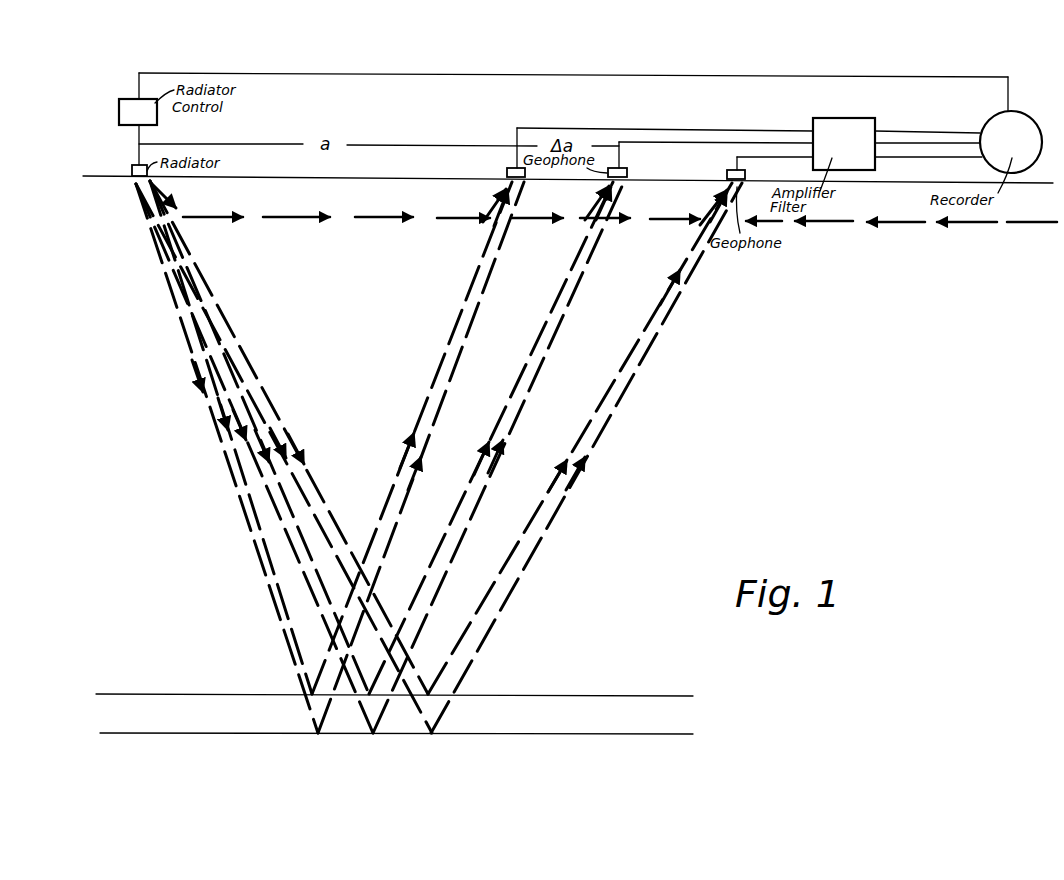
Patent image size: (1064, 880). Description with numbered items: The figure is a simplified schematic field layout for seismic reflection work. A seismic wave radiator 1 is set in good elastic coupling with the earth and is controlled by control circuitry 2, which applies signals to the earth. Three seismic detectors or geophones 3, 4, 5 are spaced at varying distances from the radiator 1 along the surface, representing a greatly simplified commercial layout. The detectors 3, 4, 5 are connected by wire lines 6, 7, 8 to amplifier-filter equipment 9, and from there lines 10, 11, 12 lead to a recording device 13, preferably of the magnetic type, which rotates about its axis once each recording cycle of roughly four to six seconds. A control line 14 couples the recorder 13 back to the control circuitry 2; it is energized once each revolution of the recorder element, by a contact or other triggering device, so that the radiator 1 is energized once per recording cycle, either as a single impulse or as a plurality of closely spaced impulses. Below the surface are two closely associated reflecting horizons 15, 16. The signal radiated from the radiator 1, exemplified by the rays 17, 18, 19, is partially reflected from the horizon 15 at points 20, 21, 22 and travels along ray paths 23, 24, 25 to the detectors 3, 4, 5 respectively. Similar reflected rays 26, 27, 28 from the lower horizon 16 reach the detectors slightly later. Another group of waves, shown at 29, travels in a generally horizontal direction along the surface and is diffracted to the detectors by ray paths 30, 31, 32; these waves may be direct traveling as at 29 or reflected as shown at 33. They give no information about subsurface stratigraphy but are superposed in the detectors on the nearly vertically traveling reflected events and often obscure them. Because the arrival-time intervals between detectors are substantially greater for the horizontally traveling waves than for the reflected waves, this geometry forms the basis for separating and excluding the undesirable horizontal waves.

The seismic wave radiator 1 is at (133, 170).
The control circuitry 2 is at (119, 109).
The seismic detector 3 is at (507, 172).
The seismic detector 4 is at (628, 171).
The seismic detector 5 is at (745, 172).
The wire line 6 is at (604, 128).
The wire line 7 is at (694, 141).
The wire line 8 is at (775, 156).
The amplifier-filter equipment 9 is at (842, 118).
The line 10 is at (890, 131).
The line 11 is at (943, 142).
The line 12 is at (899, 159).
The recording device 13 is at (1024, 112).
The control line 14 is at (460, 73).
The reflecting horizon 15 is at (153, 693).
The reflecting horizon 16 is at (146, 734).
The ray 17 is at (252, 520).
The ray 18 is at (281, 463).
The ray 19 is at (262, 390).
The reflection point 20 is at (314, 700).
The reflection point 21 is at (364, 712).
The reflection point 22 is at (434, 698).
The ray path 23 is at (460, 318).
The ray path 24 is at (537, 343).
The ray path 25 is at (637, 345).
The reflected ray 26 is at (412, 485).
The reflected ray 27 is at (470, 515).
The reflected ray 28 is at (540, 540).
The horizontally traveling seismic waves 29 is at (289, 218).
The ray path 30 is at (494, 201).
The ray path 31 is at (604, 198).
The ray path 32 is at (720, 199).
The reflected horizontally traveling waves 33 is at (903, 224).